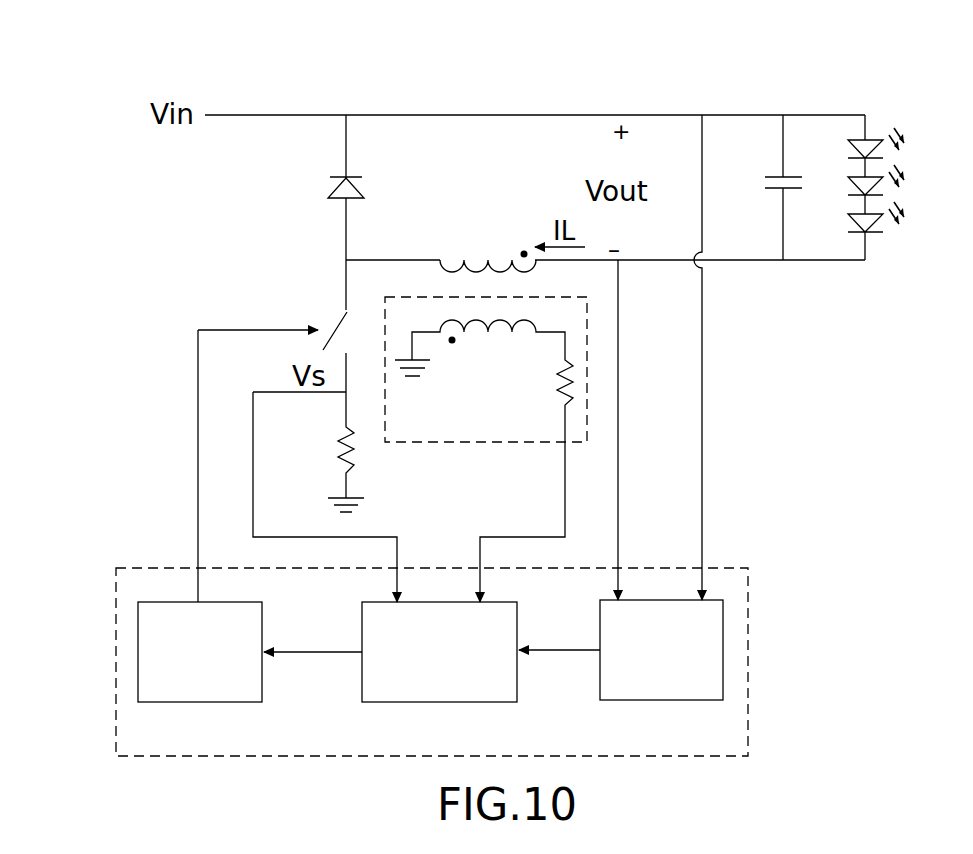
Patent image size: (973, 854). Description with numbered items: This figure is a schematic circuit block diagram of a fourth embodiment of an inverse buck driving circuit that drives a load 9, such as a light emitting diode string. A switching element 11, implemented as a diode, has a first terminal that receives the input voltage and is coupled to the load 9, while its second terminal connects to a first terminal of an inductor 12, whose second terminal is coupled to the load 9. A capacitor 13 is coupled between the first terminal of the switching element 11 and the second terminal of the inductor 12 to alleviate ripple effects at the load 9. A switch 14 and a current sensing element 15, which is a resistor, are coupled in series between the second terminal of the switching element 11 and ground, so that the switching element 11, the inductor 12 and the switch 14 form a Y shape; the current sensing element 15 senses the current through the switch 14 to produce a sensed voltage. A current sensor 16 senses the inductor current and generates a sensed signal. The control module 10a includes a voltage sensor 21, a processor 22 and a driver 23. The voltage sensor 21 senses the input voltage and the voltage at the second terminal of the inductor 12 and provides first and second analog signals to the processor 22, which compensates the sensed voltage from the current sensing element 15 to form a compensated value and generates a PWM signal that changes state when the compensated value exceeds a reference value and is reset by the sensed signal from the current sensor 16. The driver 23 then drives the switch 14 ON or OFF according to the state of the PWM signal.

The load 9 is at (880, 128).
The control module 10a is at (750, 622).
The switching element 11 is at (340, 190).
The inductor 12 is at (486, 250).
The capacitor 13 is at (765, 176).
The switch 14 is at (340, 322).
The current sensing element 15 is at (340, 436).
The current sensor 16 is at (472, 444).
The voltage sensor 21 is at (723, 668).
The processor 22 is at (497, 602).
The driver 23 is at (138, 662).